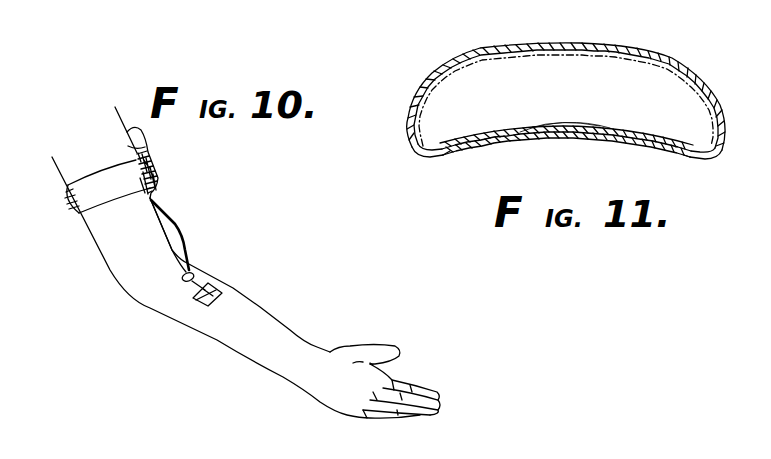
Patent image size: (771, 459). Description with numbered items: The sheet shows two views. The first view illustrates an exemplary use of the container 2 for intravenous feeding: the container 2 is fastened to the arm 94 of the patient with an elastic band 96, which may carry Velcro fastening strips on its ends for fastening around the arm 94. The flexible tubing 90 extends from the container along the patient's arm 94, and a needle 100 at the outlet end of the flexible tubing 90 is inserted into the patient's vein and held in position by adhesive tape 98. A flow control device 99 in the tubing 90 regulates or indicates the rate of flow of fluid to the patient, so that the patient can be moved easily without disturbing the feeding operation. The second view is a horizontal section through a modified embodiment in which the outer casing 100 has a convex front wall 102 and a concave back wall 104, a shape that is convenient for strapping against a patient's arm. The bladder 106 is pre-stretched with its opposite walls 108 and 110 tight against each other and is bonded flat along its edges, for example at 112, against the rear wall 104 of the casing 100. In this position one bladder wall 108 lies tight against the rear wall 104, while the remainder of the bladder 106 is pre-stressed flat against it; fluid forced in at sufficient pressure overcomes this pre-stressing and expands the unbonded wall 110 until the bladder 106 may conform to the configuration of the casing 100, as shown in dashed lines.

In FIG. 10, the container 2 is at (143, 137).
In FIG. 10, the flexible tubing 90 is at (180, 227).
In FIG. 10, the arm 94 is at (110, 257).
In FIG. 10, the elastic band 96 is at (75, 205).
In FIG. 10, the adhesive tape 98 is at (217, 290).
In FIG. 10, the flow control device 99 is at (195, 276).
In FIG. 10, the needle 100 is at (220, 287).
In FIG. 11, the needle 100 is at (554, 106).
In FIG. 11, the convex front wall 102 is at (537, 47).
In FIG. 11, the concave back wall 104 is at (489, 147).
In FIG. 11, the bladder 106 is at (592, 57).
In FIG. 11, the bladder wall 108 is at (536, 131).
In FIG. 11, the unbonded bladder wall 110 is at (534, 127).
In FIG. 11, the bonded edges 112 is at (454, 158).